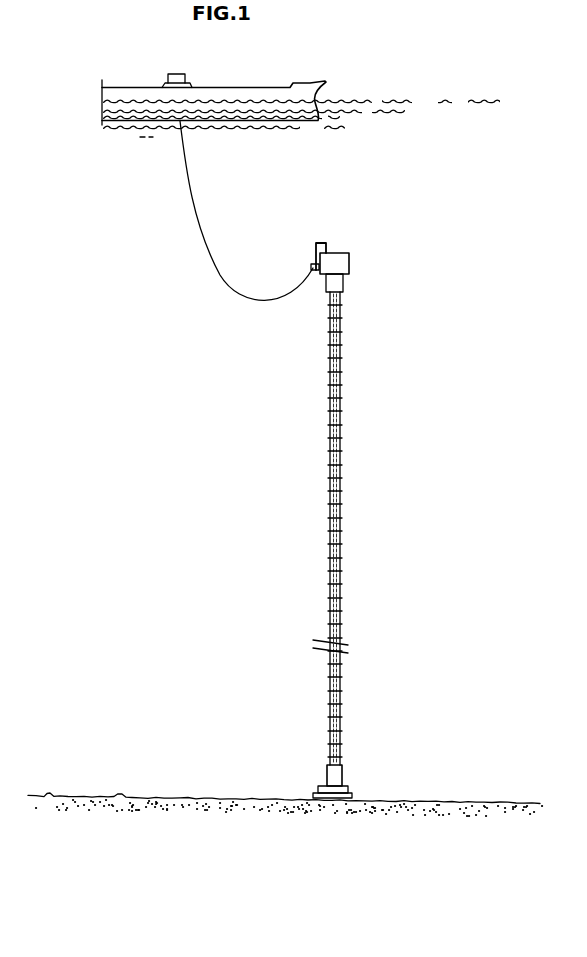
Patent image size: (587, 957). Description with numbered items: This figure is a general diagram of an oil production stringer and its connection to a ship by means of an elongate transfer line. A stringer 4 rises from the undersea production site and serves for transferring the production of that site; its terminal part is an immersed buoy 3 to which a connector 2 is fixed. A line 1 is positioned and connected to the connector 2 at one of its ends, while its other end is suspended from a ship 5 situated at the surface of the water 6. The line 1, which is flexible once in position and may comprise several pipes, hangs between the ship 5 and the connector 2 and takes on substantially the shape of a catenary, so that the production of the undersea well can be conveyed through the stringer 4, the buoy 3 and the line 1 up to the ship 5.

The line 1 is at (203, 237).
The connector 2 is at (311, 267).
The immersed buoy 3 is at (340, 263).
The stringer 4 is at (345, 511).
The ship 5 is at (306, 76).
The surface of the water 6 is at (390, 99).